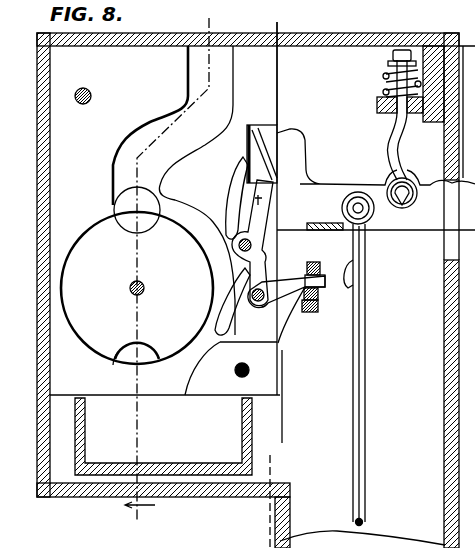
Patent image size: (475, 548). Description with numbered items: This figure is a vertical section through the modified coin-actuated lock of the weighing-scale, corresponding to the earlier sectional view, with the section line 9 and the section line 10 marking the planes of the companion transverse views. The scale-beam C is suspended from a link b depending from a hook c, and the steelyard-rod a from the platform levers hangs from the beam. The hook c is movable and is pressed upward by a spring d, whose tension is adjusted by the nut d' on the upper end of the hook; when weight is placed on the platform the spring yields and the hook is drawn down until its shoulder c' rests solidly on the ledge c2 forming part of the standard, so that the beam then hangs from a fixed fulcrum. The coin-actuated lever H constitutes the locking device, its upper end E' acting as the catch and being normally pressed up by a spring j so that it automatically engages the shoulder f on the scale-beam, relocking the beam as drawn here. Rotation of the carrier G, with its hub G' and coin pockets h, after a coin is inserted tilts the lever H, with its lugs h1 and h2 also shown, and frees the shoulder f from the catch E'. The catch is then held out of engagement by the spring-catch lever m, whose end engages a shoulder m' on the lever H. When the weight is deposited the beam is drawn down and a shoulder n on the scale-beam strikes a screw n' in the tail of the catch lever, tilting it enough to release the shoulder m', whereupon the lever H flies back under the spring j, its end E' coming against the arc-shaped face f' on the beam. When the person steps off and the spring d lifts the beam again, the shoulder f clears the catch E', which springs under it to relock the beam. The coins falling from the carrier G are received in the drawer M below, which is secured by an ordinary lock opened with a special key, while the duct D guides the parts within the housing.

The section line 9 9 is at (168, 262).
The section line 10 10 is at (269, 62).
The duct D is at (174, 190).
The carrier G is at (137, 288).
The wheel hub G' is at (147, 288).
The pockets of wheel h is at (138, 276).
The arm h1 is at (232, 301).
The lug h2 is at (257, 205).
The coin-actuated lever H is at (252, 243).
The spring j is at (236, 198).
The upper end of lever (lock or catch) E' is at (283, 165).
The shoulder on scale-beam f is at (264, 155).
The arc-shaped face f' is at (266, 153).
The spring-catch lever m is at (286, 285).
The shoulder on lever H m' is at (281, 291).
The shoulder on scale-beam n is at (325, 220).
The screw n' is at (317, 283).
The drawer M is at (157, 434).
The scale-beam C is at (376, 200).
The link b is at (407, 181).
The hook c is at (390, 120).
The shoulder of hook c' is at (373, 71).
The ledge or support c2 is at (389, 84).
The spring d is at (389, 83).
The nut d' is at (384, 56).
The steelyard-rod a is at (361, 359).